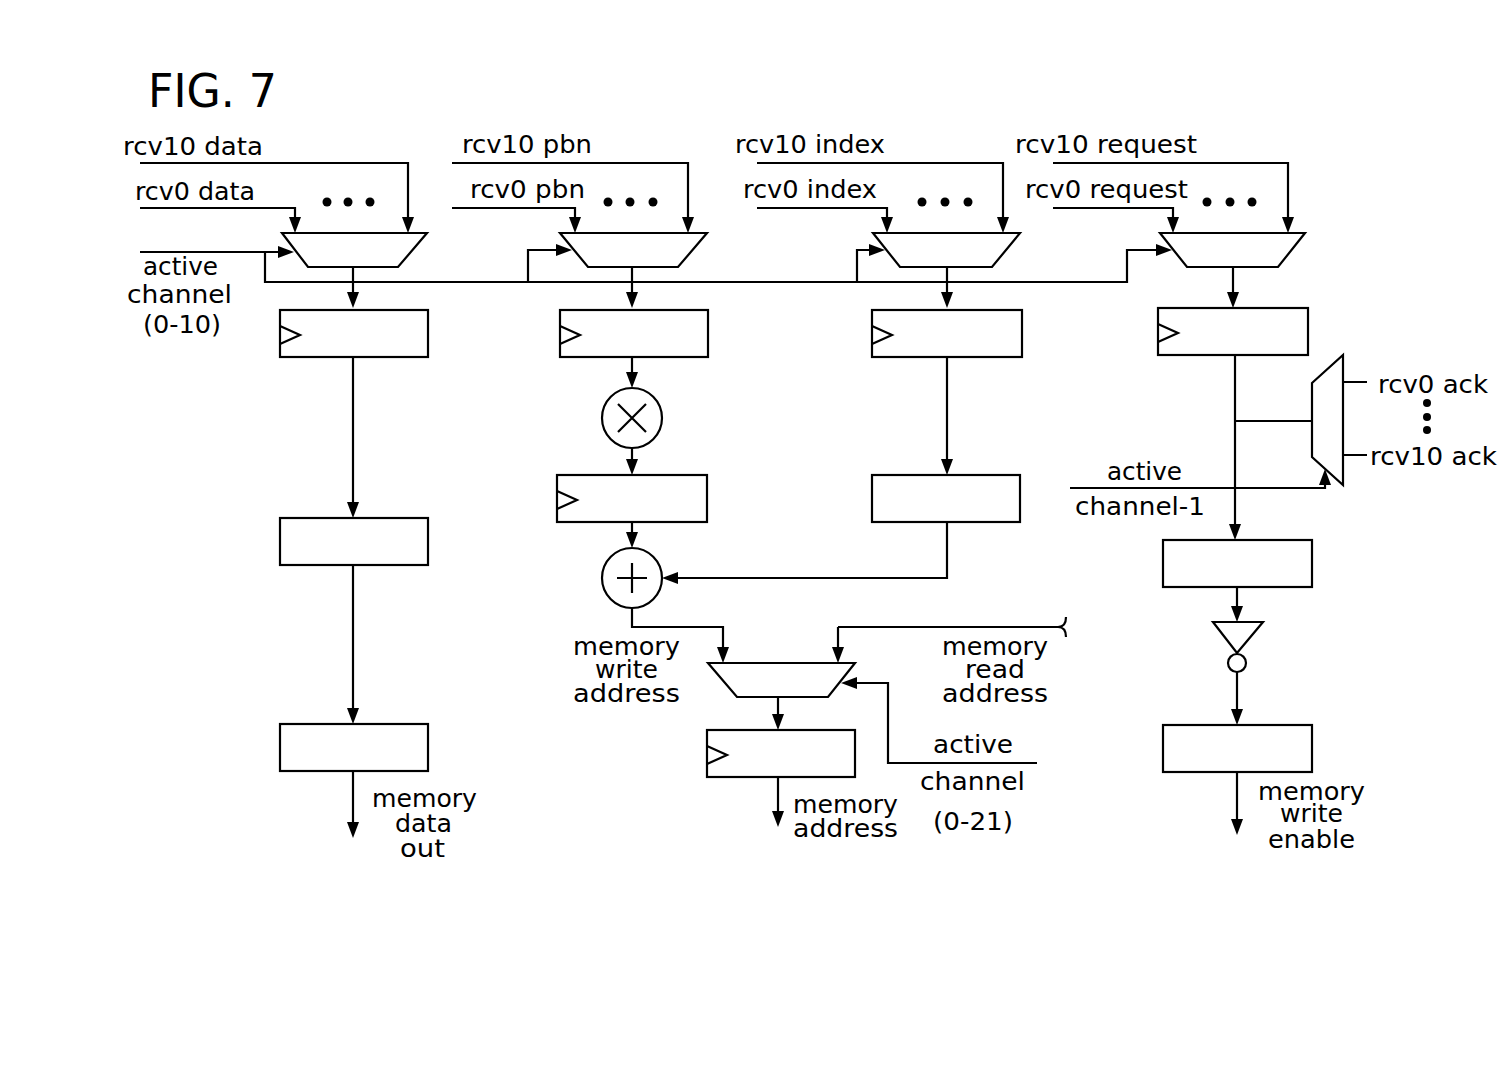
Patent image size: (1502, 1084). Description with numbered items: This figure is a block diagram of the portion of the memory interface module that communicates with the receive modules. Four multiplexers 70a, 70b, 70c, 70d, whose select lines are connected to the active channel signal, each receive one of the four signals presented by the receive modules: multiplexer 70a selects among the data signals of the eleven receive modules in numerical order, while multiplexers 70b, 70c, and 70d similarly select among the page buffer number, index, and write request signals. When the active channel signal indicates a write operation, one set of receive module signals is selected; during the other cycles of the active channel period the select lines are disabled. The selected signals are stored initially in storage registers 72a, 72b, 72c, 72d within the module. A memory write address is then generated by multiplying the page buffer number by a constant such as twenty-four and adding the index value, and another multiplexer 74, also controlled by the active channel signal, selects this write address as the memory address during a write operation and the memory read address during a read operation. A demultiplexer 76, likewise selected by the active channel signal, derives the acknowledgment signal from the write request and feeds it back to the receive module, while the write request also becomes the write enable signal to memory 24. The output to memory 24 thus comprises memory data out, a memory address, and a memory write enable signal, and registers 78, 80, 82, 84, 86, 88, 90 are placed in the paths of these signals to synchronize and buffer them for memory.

The multiplexer 70a is at (416, 248).
The multiplexer 70b is at (697, 248).
The multiplexer 70c is at (1010, 248).
The multiplexer 70d is at (1295, 248).
The storage register 72a is at (428, 333).
The storage register 72b is at (708, 333).
The storage register 72c is at (1022, 340).
The storage register 72d is at (1308, 332).
The memory 24 is at (678, 418).
The multiplexer 74 is at (776, 662).
The demultiplexer 76 is at (1310, 402).
The register 78 is at (428, 548).
The register 80 is at (428, 752).
The register 82 is at (707, 505).
The register 84 is at (978, 475).
The register 86 is at (1312, 570).
The register 88 is at (1312, 755).
The register 90 is at (733, 777).